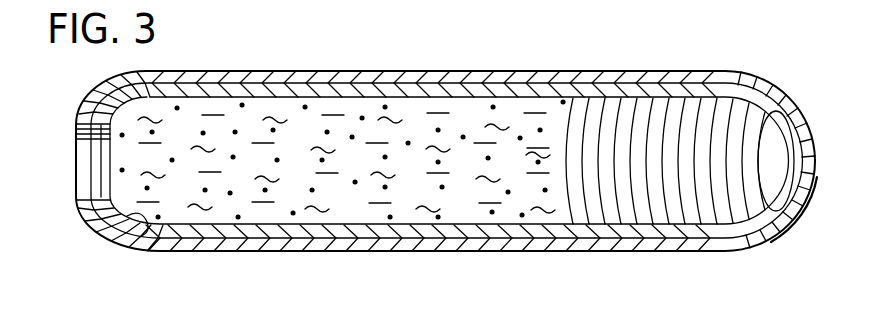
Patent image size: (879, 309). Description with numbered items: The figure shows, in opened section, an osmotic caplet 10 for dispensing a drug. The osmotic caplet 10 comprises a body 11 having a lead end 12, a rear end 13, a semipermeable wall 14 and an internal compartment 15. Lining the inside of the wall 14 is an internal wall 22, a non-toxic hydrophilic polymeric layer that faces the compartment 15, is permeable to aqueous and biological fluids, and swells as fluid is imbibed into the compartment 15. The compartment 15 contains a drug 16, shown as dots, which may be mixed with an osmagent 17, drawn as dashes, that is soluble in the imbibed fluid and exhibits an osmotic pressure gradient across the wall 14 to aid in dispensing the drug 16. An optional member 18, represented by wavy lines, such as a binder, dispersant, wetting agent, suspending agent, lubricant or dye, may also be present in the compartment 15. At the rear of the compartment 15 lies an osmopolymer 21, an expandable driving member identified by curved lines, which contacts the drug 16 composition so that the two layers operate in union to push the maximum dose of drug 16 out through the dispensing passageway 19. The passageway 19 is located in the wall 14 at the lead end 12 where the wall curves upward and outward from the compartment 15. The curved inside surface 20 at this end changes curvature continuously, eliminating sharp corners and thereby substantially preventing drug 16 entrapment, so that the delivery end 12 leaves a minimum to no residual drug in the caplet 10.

The osmotic caplet 10 is at (657, 56).
The body 11 is at (742, 66).
The lead end 12 is at (78, 202).
The rear end 13 is at (815, 157).
The semipermeable wall 14 is at (788, 103).
The compartment 15 is at (470, 110).
The drug 16 is at (437, 218).
The osmagent 17 is at (480, 203).
The member 18 is at (323, 208).
The dispensing passageway 19 is at (92, 162).
The curved inside surface 20 is at (143, 220).
The osmopolymer 21 is at (738, 213).
The internal wall 22 is at (262, 228).